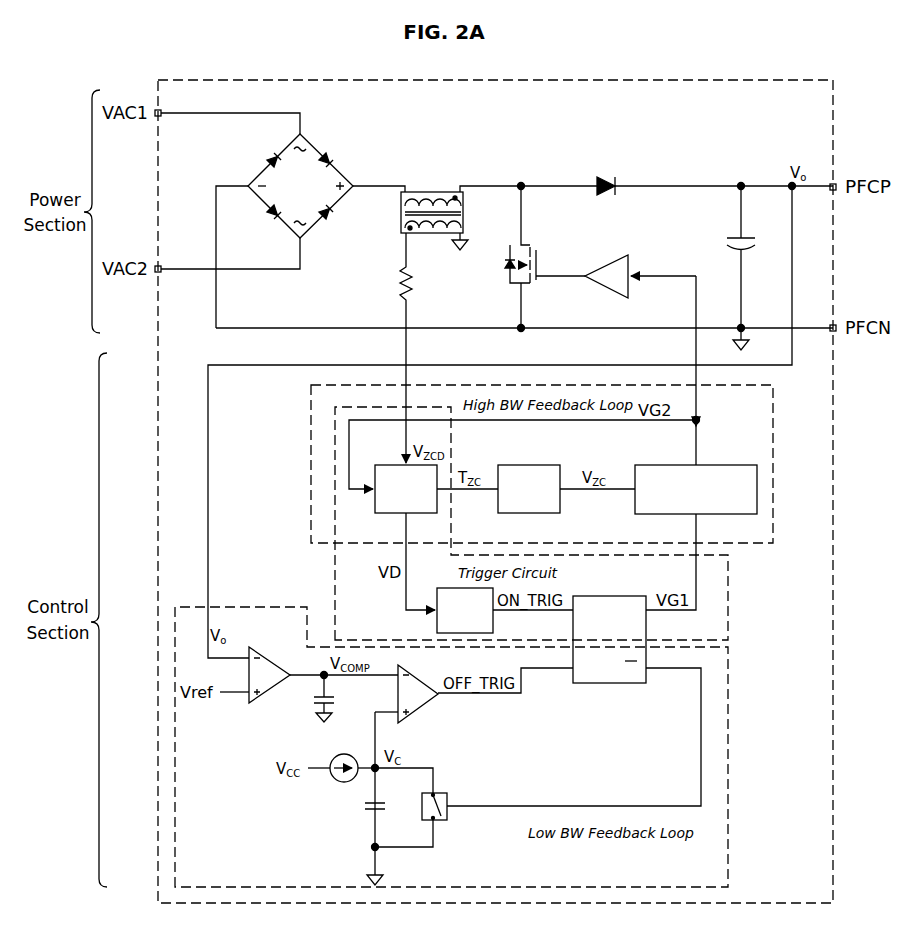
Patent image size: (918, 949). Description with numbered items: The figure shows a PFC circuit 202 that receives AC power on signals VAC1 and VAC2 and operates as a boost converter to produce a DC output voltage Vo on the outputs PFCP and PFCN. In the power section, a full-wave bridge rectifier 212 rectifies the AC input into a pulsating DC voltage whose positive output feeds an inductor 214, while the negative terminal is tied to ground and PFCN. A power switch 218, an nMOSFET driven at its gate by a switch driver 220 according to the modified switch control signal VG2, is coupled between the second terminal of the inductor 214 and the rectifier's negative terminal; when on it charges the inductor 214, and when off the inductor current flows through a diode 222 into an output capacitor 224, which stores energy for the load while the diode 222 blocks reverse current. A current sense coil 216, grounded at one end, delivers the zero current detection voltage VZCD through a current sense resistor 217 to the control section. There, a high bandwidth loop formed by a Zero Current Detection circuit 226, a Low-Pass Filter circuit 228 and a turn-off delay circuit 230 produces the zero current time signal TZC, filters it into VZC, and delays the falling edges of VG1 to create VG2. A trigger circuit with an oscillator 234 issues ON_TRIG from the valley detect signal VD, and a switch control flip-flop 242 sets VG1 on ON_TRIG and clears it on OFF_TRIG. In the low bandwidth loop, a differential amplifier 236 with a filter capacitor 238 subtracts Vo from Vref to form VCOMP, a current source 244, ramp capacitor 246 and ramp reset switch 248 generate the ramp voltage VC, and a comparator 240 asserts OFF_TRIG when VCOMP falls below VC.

The PFC circuit 202 is at (208, 80).
The full-wave bridge rectifier 212 is at (322, 150).
The inductor 214 is at (433, 202).
The current sense coil 216 is at (435, 226).
The current sense resistor 217 is at (397, 290).
The power switch 218 is at (541, 263).
The switch driver 220 is at (604, 290).
The diode 222 is at (616, 184).
The output capacitor 224 is at (740, 236).
The Zero Current Detection (ZCD) circuit 226 is at (391, 514).
The Low-Pass Filter (LPF) circuit 228 is at (530, 464).
The turn-off delay circuit 230 is at (661, 465).
The oscillator 234 is at (437, 625).
The differential amplifier 236 is at (260, 702).
The filter capacitor 238 is at (320, 700).
The comparator 240 is at (426, 706).
The switch control flip-flop 242 is at (612, 683).
The current source 244 is at (340, 782).
The ramp capacitor 246 is at (372, 812).
The ramp reset switch 248 is at (450, 818).